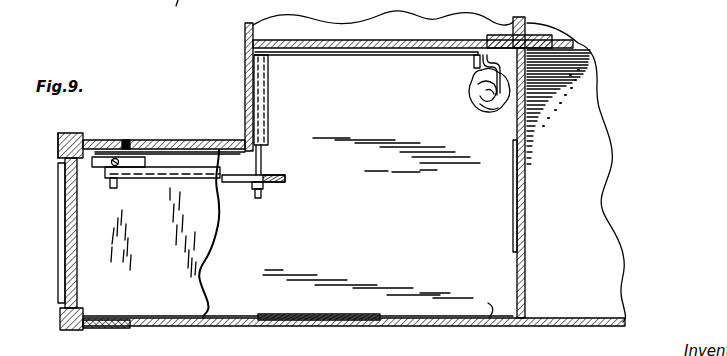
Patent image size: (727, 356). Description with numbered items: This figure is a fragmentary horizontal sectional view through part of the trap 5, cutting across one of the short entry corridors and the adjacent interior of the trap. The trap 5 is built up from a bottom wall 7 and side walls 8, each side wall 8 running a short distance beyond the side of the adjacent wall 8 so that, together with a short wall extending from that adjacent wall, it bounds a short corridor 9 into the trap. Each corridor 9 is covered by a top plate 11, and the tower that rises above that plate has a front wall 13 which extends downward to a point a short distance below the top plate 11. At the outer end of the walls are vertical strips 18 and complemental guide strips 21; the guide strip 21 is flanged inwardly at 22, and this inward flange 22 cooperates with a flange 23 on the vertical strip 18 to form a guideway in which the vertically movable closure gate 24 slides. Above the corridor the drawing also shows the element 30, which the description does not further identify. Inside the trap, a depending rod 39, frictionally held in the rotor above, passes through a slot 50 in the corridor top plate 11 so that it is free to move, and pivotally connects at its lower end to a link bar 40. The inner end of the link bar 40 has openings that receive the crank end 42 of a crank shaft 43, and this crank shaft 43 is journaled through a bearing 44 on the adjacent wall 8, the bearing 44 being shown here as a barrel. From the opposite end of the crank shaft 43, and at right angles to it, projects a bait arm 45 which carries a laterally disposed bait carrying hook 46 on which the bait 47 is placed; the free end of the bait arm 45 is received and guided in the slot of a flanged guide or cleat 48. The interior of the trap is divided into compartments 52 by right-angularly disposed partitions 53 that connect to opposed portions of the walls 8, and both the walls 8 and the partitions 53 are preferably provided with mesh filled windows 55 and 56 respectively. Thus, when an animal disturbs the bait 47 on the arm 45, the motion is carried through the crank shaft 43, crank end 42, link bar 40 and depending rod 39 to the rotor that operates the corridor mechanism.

The trap 5 is at (425, 326).
The bottom wall 7 is at (488, 318).
The side wall 8 is at (245, 60).
The corridor 9 is at (177, 232).
The top plate 11 is at (198, 151).
The front wall 13 is at (77, 268).
The vertical strip 18 is at (105, 140).
The guide strip 21 is at (71, 133).
The inward flange 22 is at (58, 148).
The flange 23 is at (77, 160).
The closure gate 24 is at (65, 232).
The top wall 30 is at (407, 40).
The depending rod 39 is at (118, 158).
The link bar 40 is at (236, 182).
The crank end 42 is at (262, 196).
The crank shaft 43 is at (262, 164).
The bearing 44 is at (255, 90).
The bait arm 45 is at (383, 56).
The bait carrying hook 46 is at (478, 84).
The bait 47 is at (478, 110).
The flanged guide or cleat 48 is at (472, 60).
The slot 50 is at (143, 157).
The compartment 52 is at (371, 218).
The partition 53 is at (527, 293).
The mesh filled window 55 is at (313, 325).
The mesh filled window 56 is at (526, 218).